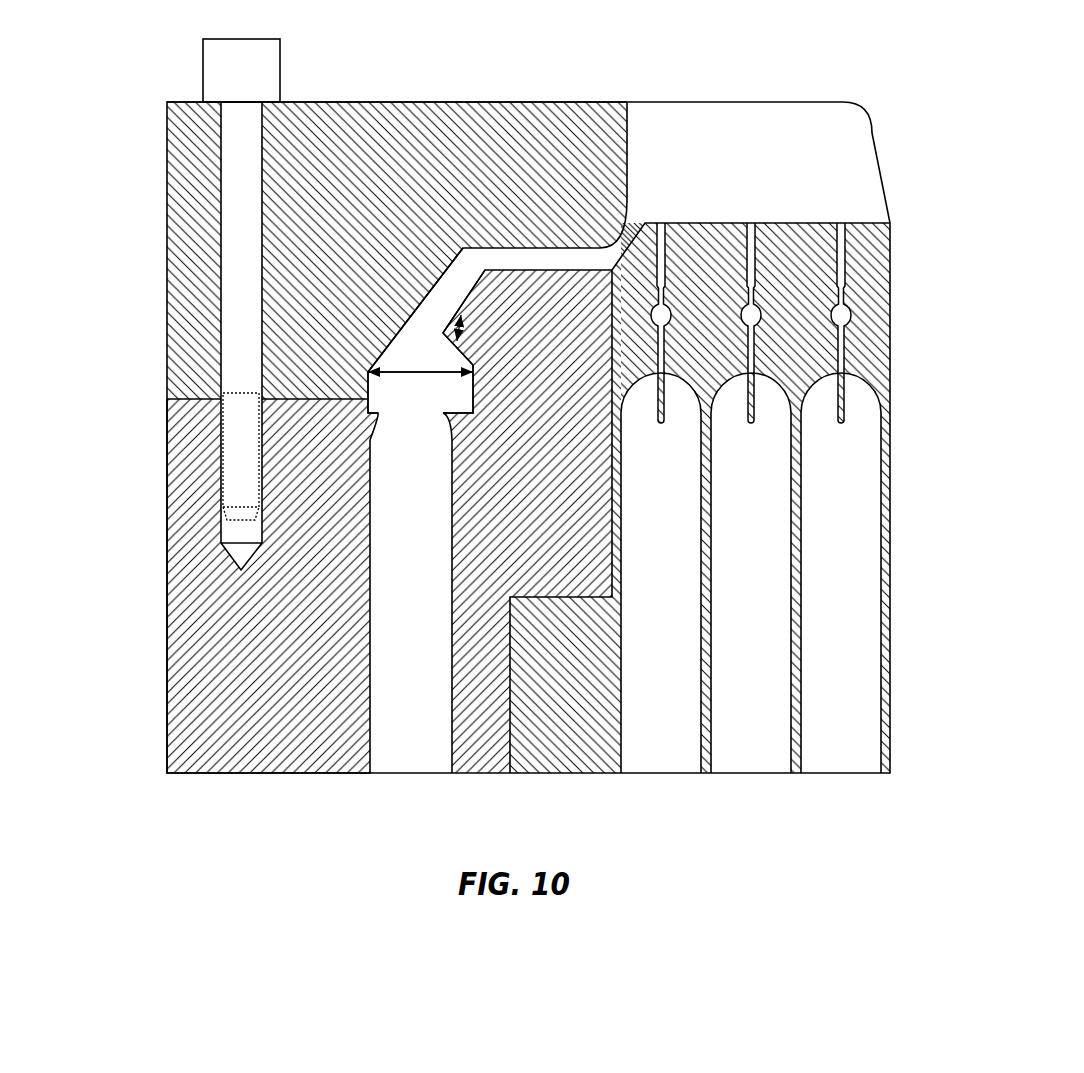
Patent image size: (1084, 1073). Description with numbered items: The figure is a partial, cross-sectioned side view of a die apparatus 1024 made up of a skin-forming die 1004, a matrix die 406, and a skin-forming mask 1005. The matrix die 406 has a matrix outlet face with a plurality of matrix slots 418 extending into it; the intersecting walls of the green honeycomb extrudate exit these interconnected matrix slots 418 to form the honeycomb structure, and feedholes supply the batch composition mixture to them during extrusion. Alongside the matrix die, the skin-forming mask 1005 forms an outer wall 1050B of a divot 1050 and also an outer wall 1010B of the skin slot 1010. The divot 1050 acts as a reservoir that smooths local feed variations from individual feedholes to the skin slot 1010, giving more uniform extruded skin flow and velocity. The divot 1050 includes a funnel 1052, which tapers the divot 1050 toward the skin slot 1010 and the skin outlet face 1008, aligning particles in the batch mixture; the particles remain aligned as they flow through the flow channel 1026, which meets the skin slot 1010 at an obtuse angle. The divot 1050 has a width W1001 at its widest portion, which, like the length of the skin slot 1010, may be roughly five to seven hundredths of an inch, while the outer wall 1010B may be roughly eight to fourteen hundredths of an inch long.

The die apparatus 1024 is at (662, 64).
The skin-forming mask 1005 is at (485, 100).
The skin slot 1010 is at (427, 282).
The skin-forming die 1004 is at (163, 496).
The skin outlet face 1008 is at (185, 396).
The flow channel 1026 is at (640, 210).
The matrix die 406 is at (708, 222).
The matrix slots 418 is at (838, 223).
The outer wall 1010B is at (466, 258).
The funnel 1052 is at (472, 362).
The width W1001 is at (474, 378).
The outer wall 1050B is at (398, 345).
The divot 1050 is at (458, 420).